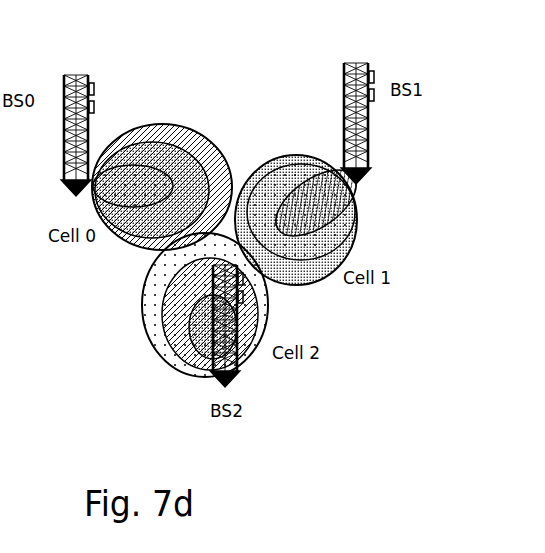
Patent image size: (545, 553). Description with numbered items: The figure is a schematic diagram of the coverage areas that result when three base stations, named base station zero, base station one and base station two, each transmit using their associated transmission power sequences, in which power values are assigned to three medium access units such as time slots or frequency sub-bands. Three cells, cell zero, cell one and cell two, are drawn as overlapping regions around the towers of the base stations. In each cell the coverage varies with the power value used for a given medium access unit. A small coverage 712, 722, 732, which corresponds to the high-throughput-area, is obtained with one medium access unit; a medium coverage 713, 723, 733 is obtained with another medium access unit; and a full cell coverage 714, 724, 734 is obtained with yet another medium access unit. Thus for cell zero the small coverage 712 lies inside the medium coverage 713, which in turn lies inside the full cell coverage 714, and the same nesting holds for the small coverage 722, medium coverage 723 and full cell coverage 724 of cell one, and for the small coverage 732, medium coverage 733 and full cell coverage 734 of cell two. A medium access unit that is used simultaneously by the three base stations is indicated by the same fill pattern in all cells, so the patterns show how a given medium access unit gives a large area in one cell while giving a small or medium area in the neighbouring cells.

The small coverage 712 is at (123, 162).
The medium coverage 713 is at (168, 142).
The full cell coverage 714 is at (213, 138).
The small coverage 722 is at (327, 177).
The medium coverage 723 is at (288, 157).
The full cell coverage 724 is at (260, 160).
The small coverage 732 is at (190, 367).
The medium coverage 733 is at (157, 338).
The full cell coverage 734 is at (142, 293).